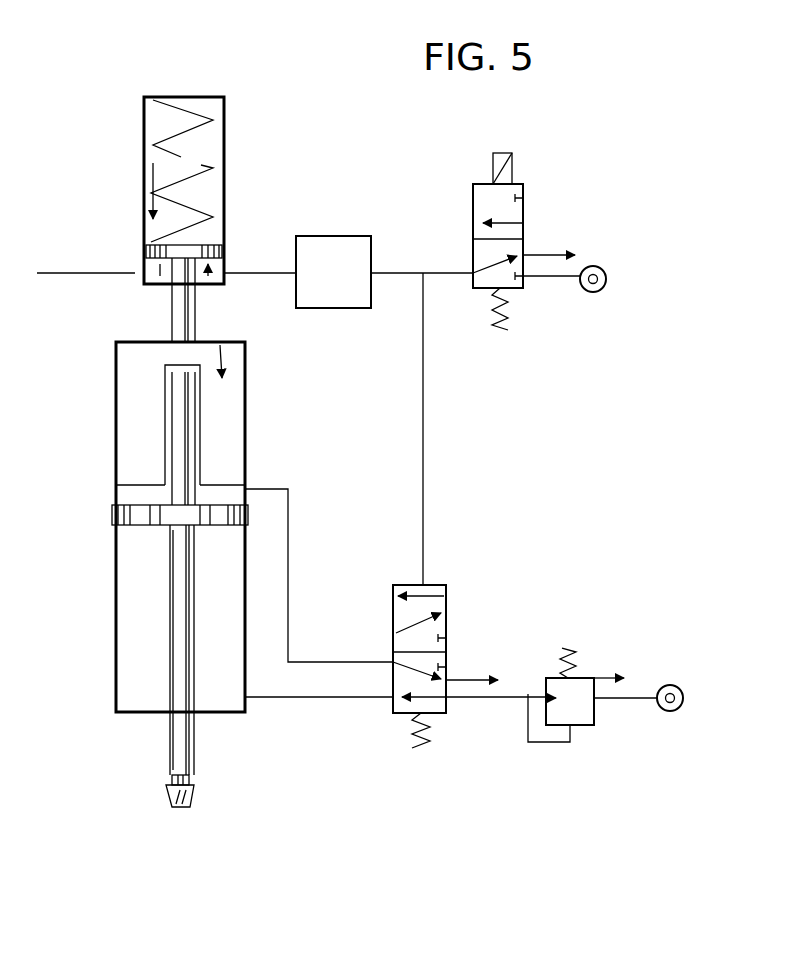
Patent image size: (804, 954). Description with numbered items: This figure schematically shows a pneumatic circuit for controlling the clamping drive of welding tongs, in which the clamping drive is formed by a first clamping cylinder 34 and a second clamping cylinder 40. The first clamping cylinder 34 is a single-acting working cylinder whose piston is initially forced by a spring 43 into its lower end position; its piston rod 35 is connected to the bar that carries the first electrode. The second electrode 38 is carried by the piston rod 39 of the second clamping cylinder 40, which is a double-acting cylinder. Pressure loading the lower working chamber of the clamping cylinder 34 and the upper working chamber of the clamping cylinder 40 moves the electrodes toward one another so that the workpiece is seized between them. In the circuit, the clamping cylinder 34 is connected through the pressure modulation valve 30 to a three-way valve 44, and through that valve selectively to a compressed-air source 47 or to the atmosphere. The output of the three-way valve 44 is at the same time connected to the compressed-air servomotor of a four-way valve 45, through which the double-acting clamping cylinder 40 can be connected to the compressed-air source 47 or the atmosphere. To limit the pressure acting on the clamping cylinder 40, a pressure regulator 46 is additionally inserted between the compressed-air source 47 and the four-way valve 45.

The pressure modulation valve 30 is at (328, 236).
The first clamping cylinder 34 is at (225, 128).
The piston rod 35 is at (170, 315).
The second electrode 38 is at (168, 800).
The piston rod 39 is at (168, 750).
The second clamping cylinder 40 is at (115, 416).
The spring 43 is at (193, 113).
The three-way valve 44 is at (523, 210).
The four-way valve 45 is at (448, 620).
The pressure regulator 46 is at (585, 678).
The compressed-air source 47 is at (603, 263).